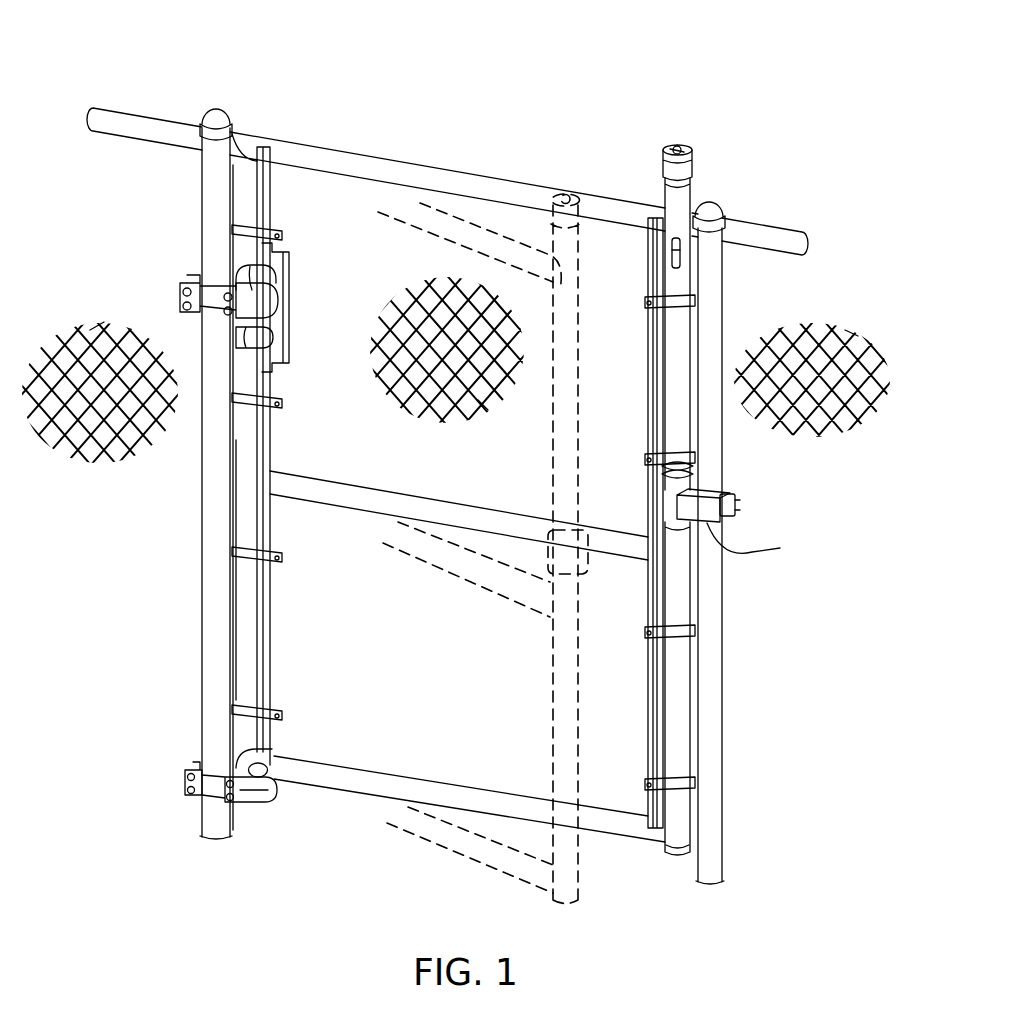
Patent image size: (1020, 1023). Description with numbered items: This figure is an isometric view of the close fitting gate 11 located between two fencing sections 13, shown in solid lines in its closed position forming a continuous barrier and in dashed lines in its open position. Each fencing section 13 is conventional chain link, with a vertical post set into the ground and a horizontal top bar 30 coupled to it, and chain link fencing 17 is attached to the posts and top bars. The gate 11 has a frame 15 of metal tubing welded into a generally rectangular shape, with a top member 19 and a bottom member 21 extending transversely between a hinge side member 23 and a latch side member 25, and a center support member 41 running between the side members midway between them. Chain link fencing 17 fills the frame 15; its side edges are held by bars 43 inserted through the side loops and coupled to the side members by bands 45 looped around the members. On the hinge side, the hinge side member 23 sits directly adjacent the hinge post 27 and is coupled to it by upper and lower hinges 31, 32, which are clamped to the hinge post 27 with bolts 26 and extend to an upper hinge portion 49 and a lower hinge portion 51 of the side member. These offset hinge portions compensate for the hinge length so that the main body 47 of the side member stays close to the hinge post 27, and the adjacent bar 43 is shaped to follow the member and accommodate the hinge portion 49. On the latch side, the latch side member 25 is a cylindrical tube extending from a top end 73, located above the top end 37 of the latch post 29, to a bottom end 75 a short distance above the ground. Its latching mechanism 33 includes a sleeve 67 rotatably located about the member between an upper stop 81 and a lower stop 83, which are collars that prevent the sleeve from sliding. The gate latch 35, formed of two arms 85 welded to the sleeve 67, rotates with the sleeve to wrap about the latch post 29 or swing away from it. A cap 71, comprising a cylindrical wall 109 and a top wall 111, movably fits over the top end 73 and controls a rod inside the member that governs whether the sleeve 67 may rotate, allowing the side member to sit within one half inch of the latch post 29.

The gate 11 is at (454, 464).
The fencing sections 13 is at (395, 300).
The frame 15 is at (381, 793).
The chain link fencing 17 is at (97, 325).
The top member 19 is at (440, 178).
The bottom member 21 is at (358, 779).
The hinge side member 23 is at (245, 682).
The latch side member 25 is at (678, 690).
The bolts 26 is at (188, 788).
The hinge post 27 is at (212, 685).
The latch post 29 is at (712, 692).
The top bars 30 is at (132, 121).
The hinge 31 is at (258, 307).
The hinge 32 is at (258, 802).
The latching mechanism 33 is at (715, 507).
The gate latch 35 is at (736, 504).
The top end 37 is at (217, 113).
The center support member 41 is at (420, 491).
The bars 43 is at (268, 438).
The bands 45 is at (282, 546).
The main body 47 is at (243, 572).
The upper hinge portion 49 is at (258, 346).
The lower hinge portion 51 is at (262, 766).
The sleeve 67 is at (688, 489).
The cap 71 is at (681, 150).
The top end 73 is at (665, 192).
The bottom end 75 is at (683, 855).
The upper stop 81 is at (658, 468).
The lower stop 83 is at (685, 537).
The arms 85 is at (741, 520).
The cylindrical wall 109 is at (677, 170).
The top wall 111 is at (668, 150).